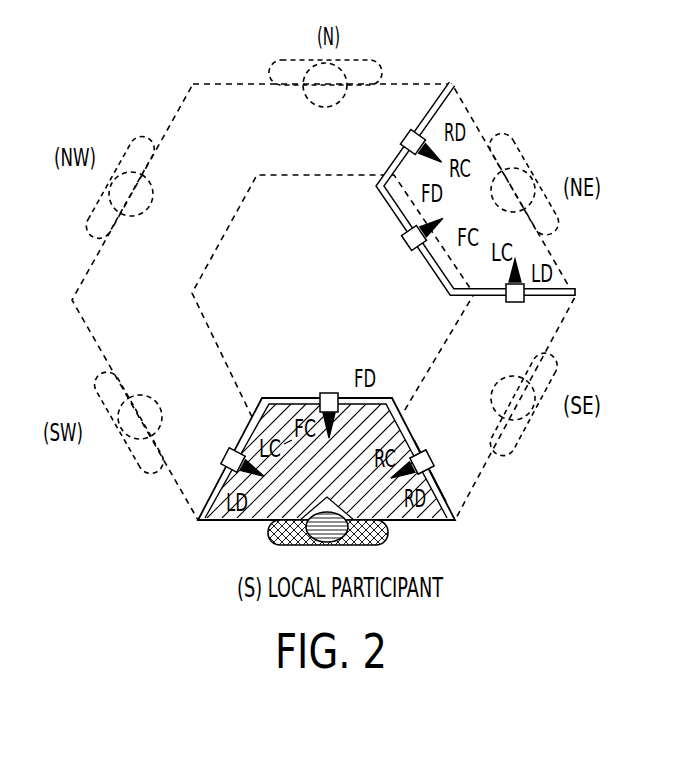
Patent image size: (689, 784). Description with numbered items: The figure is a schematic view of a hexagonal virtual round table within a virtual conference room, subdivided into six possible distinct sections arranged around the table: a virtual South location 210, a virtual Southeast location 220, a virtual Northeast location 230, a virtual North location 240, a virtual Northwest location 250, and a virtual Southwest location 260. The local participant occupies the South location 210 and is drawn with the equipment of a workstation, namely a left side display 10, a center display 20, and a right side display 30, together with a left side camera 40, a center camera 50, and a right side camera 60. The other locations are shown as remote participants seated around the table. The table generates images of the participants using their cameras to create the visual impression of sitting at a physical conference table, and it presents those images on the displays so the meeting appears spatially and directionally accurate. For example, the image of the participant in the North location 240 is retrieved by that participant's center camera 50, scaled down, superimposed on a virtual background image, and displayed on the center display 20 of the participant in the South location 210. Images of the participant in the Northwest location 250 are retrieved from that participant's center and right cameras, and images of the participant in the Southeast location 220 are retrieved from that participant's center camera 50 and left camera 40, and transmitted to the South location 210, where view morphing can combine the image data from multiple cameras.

The left side display 10 is at (198, 516).
The center display 20 is at (287, 398).
The right side display 30 is at (418, 447).
The left side camera 40 is at (227, 455).
The center camera 50 is at (327, 393).
The right side camera 60 is at (432, 458).
The virtual South (S) location 210 is at (395, 502).
The virtual Southeast (SE) location 220 is at (547, 320).
The virtual Northeast (NE) location 230 is at (475, 158).
The virtual North (N) location 240 is at (257, 92).
The virtual Northwest (NW) location 250 is at (148, 233).
The virtual Southwest (SW) location 260 is at (167, 388).